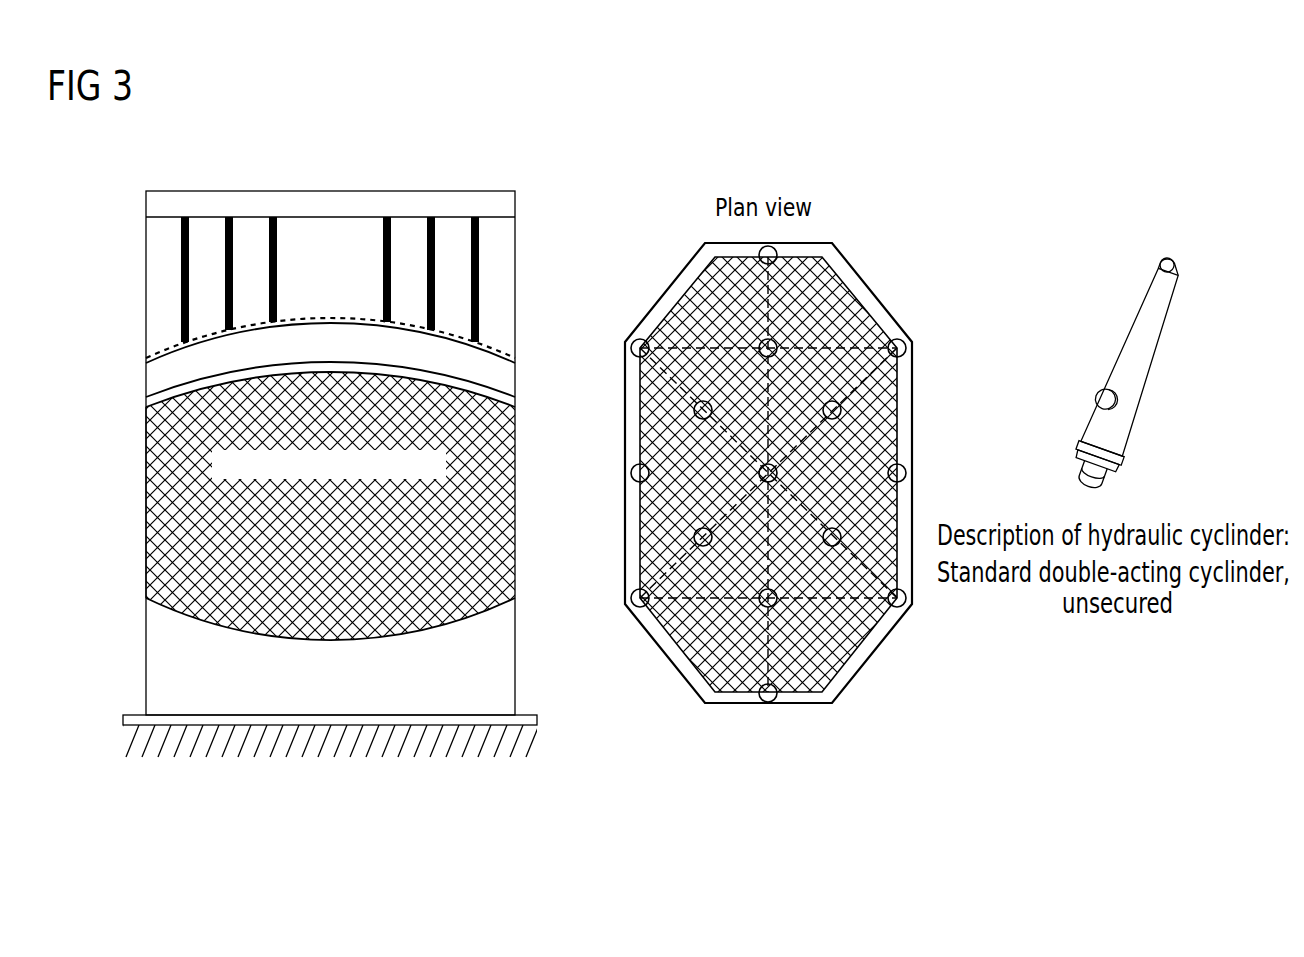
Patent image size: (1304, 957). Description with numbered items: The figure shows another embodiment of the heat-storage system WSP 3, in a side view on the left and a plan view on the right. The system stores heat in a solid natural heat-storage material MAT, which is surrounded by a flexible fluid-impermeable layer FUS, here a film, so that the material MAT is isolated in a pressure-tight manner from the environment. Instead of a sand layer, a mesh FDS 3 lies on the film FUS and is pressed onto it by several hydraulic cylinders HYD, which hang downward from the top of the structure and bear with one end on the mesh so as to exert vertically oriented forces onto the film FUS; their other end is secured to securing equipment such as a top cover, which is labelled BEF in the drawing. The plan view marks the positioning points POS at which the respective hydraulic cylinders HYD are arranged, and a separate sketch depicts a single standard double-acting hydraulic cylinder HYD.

The hydraulic cylinder HYD is at (277, 240).
The fastening frame BEF is at (499, 185).
The mesh FDS 3 is at (330, 312).
The flexible fluid-impermeable layer FUS is at (330, 362).
The heat-storage material MAT is at (330, 505).
The heat-storage system WSP 3 is at (143, 488).
The positioning points POS is at (700, 400).